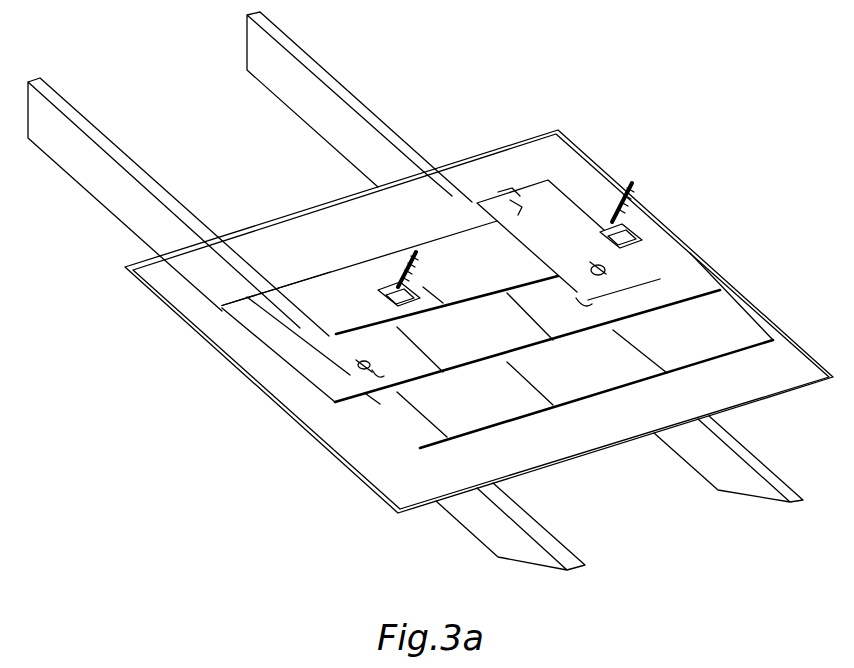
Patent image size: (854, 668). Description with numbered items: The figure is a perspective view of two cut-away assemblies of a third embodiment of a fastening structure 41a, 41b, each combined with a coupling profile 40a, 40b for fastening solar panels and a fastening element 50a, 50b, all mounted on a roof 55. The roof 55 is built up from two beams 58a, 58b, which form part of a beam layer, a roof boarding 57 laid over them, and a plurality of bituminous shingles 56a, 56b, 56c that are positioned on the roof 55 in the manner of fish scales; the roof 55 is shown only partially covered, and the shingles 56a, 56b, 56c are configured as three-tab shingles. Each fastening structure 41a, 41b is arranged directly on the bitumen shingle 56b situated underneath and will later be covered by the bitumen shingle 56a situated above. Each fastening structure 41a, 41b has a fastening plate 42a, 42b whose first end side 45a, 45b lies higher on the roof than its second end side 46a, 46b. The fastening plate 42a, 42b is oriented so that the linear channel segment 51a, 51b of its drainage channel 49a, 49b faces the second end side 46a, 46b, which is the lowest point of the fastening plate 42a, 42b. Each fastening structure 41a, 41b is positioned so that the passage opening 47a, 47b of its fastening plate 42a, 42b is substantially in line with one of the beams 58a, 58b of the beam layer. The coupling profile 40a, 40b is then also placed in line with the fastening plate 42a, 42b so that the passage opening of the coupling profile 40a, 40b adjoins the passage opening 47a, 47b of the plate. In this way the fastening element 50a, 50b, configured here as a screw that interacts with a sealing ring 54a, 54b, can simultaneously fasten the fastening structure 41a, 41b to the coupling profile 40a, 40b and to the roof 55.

The roof 55 is at (596, 113).
The roof boarding 57 is at (378, 485).
The beam 58a is at (488, 523).
The beam 58b is at (705, 460).
The bituminous shingle 56a is at (496, 268).
The bituminous shingle 56b is at (492, 338).
The bituminous shingle 56c is at (487, 392).
The coupling profile 40a is at (350, 275).
The coupling profile 40b is at (640, 222).
The fastening structure 41a is at (256, 329).
The fastening structure 41b is at (551, 172).
The fastening plate 42a is at (320, 352).
The fastening plate 42b is at (520, 205).
The first end side 45a is at (250, 300).
The first end side 45b is at (502, 192).
The second end side 46a is at (373, 400).
The second end side 46b is at (634, 292).
The passage opening 47a is at (364, 362).
The passage opening 47b is at (596, 264).
The drainage channel 49a is at (360, 368).
The drainage channel 49b is at (604, 268).
The fastening element 50a is at (417, 252).
The fastening element 50b is at (632, 182).
The linear channel segment 51a is at (376, 378).
The linear channel segment 51b is at (590, 300).
The sealing ring 54a is at (405, 262).
The sealing ring 54b is at (645, 200).